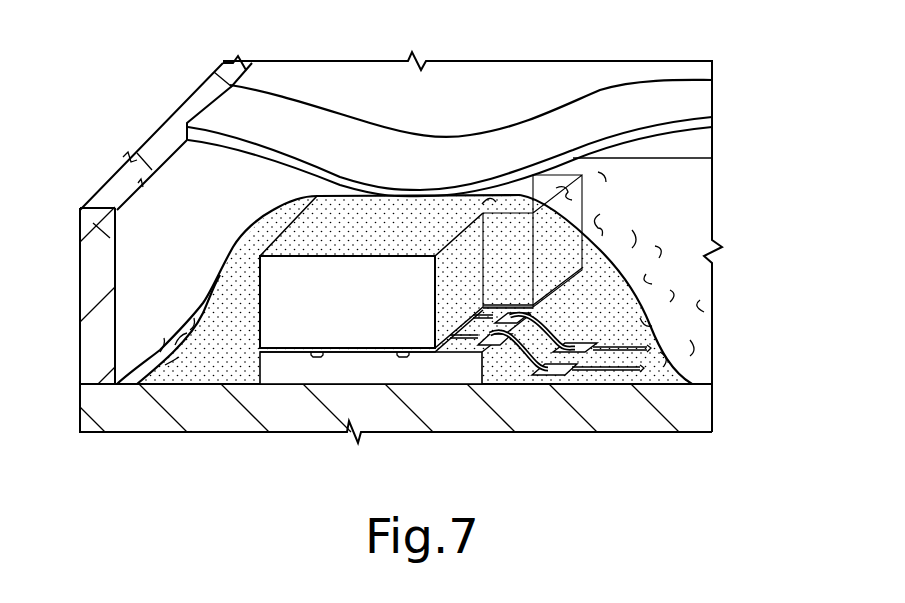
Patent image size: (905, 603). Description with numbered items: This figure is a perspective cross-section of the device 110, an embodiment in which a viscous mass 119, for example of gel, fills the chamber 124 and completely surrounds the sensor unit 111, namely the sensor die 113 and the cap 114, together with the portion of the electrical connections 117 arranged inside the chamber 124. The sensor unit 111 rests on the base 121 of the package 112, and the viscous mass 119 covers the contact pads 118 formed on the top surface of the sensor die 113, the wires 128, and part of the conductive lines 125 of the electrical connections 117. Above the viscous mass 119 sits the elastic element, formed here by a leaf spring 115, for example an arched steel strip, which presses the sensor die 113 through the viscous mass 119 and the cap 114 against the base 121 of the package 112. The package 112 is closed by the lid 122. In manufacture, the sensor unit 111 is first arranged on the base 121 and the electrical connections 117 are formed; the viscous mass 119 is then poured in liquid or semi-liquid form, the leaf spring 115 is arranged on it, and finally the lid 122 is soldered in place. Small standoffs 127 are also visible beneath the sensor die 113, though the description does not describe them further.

The device 110 is at (730, 135).
The sensor unit 111 is at (252, 273).
The package 112 is at (91, 262).
The sensor die 113 is at (288, 368).
The cap 114 is at (383, 310).
The leaf spring 115 is at (405, 147).
The electrical connections 117 is at (626, 349).
The contact pads 118 is at (465, 345).
The viscous mass 119 is at (640, 257).
The base 121 is at (637, 418).
The lid 122 is at (187, 112).
The chamber 124 is at (219, 186).
The conductive lines 125 is at (607, 355).
The standoff 127 is at (317, 357).
The wires 128 is at (478, 334).